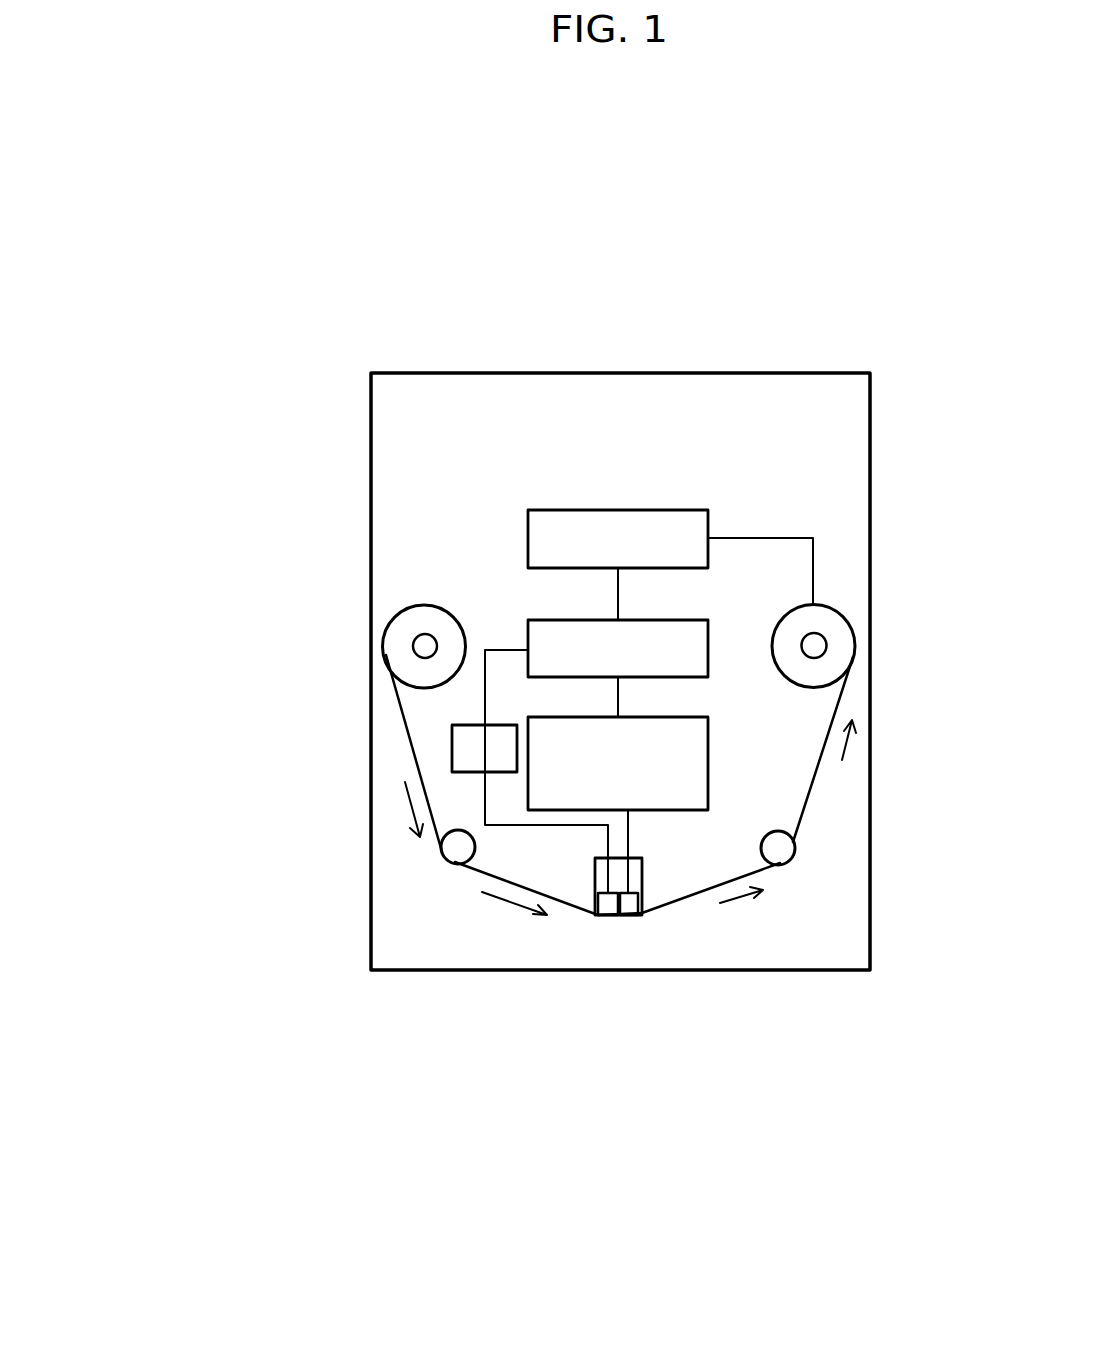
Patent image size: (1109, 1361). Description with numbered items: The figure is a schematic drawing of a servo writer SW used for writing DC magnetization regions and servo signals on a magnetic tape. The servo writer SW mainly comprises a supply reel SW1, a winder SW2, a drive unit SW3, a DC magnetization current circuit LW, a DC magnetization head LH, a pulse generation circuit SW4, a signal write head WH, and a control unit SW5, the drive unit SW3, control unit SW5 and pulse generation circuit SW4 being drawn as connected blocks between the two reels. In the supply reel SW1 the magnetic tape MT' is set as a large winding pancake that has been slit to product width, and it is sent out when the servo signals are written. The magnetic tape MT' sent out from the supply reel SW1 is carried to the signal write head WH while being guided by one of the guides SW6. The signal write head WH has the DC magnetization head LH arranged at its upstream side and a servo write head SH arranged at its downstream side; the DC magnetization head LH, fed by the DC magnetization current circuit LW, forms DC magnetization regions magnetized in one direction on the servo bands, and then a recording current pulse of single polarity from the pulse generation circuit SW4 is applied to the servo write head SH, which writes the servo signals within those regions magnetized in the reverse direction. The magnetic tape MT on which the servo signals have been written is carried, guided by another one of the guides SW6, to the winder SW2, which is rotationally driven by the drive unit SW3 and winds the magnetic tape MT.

The servo writer SW is at (692, 373).
The supply reel SW1 is at (427, 605).
The winder SW2 is at (838, 615).
The drive unit SW3 is at (663, 510).
The pulse generation circuit SW4 is at (657, 810).
The control unit SW5 is at (708, 655).
The guides SW6 is at (455, 865).
The DC magnetization current circuit LW is at (452, 725).
The servo write head SH is at (628, 915).
The DC magnetization head LH is at (607, 915).
The signal write head WH is at (642, 878).
The magnetic tape MT is at (668, 785).
The magnetic tape (before servo writing) MT' is at (329, 796).